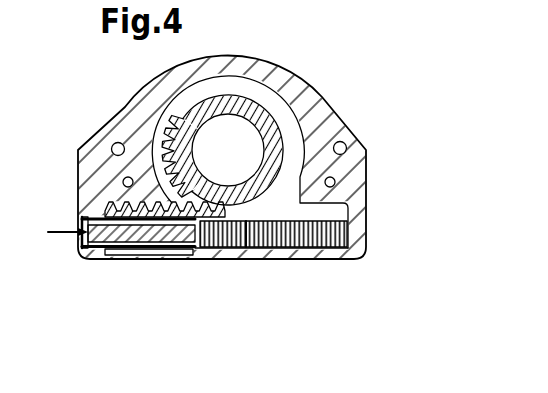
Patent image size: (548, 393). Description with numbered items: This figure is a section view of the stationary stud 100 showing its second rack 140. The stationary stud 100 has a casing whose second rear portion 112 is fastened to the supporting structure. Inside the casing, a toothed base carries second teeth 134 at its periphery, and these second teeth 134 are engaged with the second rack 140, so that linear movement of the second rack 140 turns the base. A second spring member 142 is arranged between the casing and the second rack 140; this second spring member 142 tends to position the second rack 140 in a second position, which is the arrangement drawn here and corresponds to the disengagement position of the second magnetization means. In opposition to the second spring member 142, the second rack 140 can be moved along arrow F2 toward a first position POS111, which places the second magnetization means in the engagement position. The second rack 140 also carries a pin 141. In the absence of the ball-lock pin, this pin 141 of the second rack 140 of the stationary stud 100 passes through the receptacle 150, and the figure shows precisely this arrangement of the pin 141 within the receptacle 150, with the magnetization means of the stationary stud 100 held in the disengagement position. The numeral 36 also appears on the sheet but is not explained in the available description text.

The stationary stud 100 is at (289, 284).
The second rear portion 112 is at (342, 120).
The second teeth 134 is at (183, 118).
The second rack 140 is at (193, 245).
The pin 141 is at (143, 240).
The second spring member 142 is at (333, 248).
The receptacle 150 is at (80, 248).
The arrow F2 is at (55, 238).
The first position POS111 is at (305, 284).
The element 36 is at (0, 388).